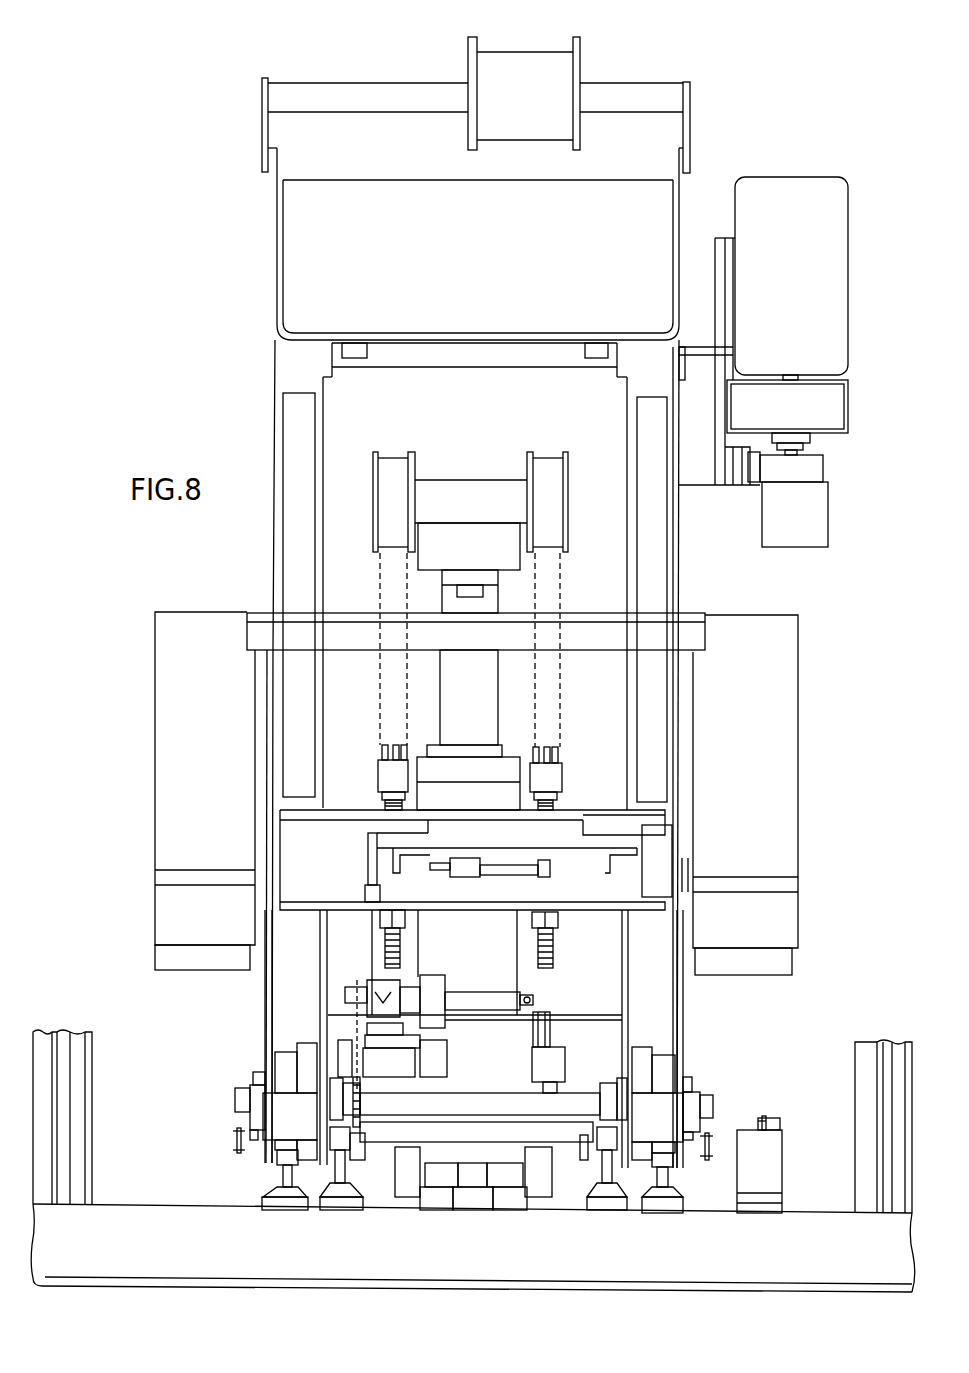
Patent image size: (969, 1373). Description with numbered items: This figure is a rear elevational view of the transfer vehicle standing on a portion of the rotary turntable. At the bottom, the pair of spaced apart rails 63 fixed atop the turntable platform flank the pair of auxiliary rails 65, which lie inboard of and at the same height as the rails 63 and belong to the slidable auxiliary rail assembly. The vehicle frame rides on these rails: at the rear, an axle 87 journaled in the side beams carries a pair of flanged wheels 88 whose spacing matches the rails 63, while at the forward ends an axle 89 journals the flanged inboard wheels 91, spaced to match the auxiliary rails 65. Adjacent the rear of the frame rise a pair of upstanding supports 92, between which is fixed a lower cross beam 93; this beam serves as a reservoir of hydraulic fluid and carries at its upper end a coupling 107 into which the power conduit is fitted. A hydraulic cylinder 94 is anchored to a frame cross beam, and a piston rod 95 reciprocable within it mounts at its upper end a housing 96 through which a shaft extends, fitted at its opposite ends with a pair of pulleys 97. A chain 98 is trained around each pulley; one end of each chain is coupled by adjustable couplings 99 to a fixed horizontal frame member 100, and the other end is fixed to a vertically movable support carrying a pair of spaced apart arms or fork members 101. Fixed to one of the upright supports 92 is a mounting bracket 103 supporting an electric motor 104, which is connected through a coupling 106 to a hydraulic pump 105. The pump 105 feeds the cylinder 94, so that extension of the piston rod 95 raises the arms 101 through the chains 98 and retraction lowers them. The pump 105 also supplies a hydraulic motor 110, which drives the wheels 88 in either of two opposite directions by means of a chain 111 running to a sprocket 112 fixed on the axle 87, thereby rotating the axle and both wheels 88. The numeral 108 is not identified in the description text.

The rails 63 is at (278, 1168).
The auxiliary rails 65 is at (343, 1160).
The axle 87 is at (477, 1093).
The flanged wheels 88 is at (297, 1053).
The axle 89 is at (460, 1137).
The inboard wheels 91 is at (360, 1150).
The upstanding supports 92 is at (265, 1017).
The lower cross beam 93 is at (497, 328).
The hydraulic cylinder 94 is at (481, 810).
The piston rod 95 is at (485, 697).
The housing 96 is at (457, 480).
The pulleys 97 is at (373, 490).
The chain 98 is at (380, 575).
The adjustable couplings 99 is at (382, 780).
The horizontal frame member 100 is at (572, 808).
The arms or fork members 101 is at (155, 960).
The mounting bracket 103 is at (715, 260).
The electric motor 104 is at (838, 315).
The hydraulic pump 105 is at (818, 492).
The coupling 106 is at (842, 422).
The coupling 107 is at (563, 78).
The cross beam 108 is at (697, 617).
The hydraulic motor 110 is at (393, 982).
The chain 111 is at (357, 982).
The sprocket 112 is at (360, 1093).